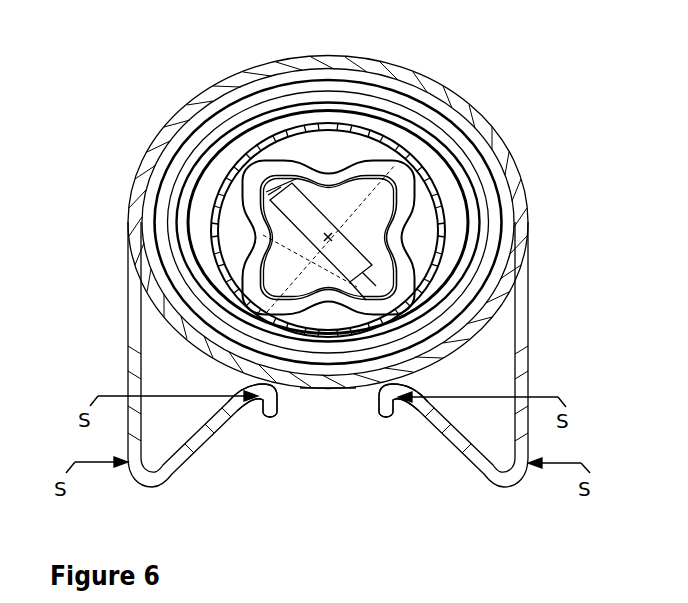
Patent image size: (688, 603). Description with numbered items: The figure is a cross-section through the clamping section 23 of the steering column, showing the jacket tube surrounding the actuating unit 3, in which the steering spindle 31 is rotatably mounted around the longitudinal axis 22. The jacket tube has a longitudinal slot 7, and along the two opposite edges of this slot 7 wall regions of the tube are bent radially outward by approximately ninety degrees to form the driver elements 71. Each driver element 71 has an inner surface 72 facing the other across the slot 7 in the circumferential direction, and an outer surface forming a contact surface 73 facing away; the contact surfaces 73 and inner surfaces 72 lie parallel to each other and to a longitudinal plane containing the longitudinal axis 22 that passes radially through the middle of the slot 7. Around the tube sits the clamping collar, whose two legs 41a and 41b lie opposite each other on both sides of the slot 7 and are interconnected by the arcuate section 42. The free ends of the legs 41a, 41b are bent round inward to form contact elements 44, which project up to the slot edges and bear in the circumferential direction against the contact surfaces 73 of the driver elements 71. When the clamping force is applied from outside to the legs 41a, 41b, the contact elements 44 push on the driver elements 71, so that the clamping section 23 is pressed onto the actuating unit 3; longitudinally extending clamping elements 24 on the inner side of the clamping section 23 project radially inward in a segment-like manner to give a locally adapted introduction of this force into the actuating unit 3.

The actuating unit 3 is at (475, 163).
The slot 7 is at (322, 400).
The longitudinal axis 22 is at (336, 236).
The clamping section 23 is at (470, 315).
The clamping elements 24 is at (462, 137).
The steering spindle 31 is at (285, 170).
The leg 41a is at (127, 377).
The leg 41b is at (518, 363).
The arcuate section 42 is at (352, 61).
The contact elements 44 is at (261, 401).
The driver elements 71 is at (266, 415).
The inner surfaces 72 is at (371, 408).
The contact surfaces 73 is at (259, 412).